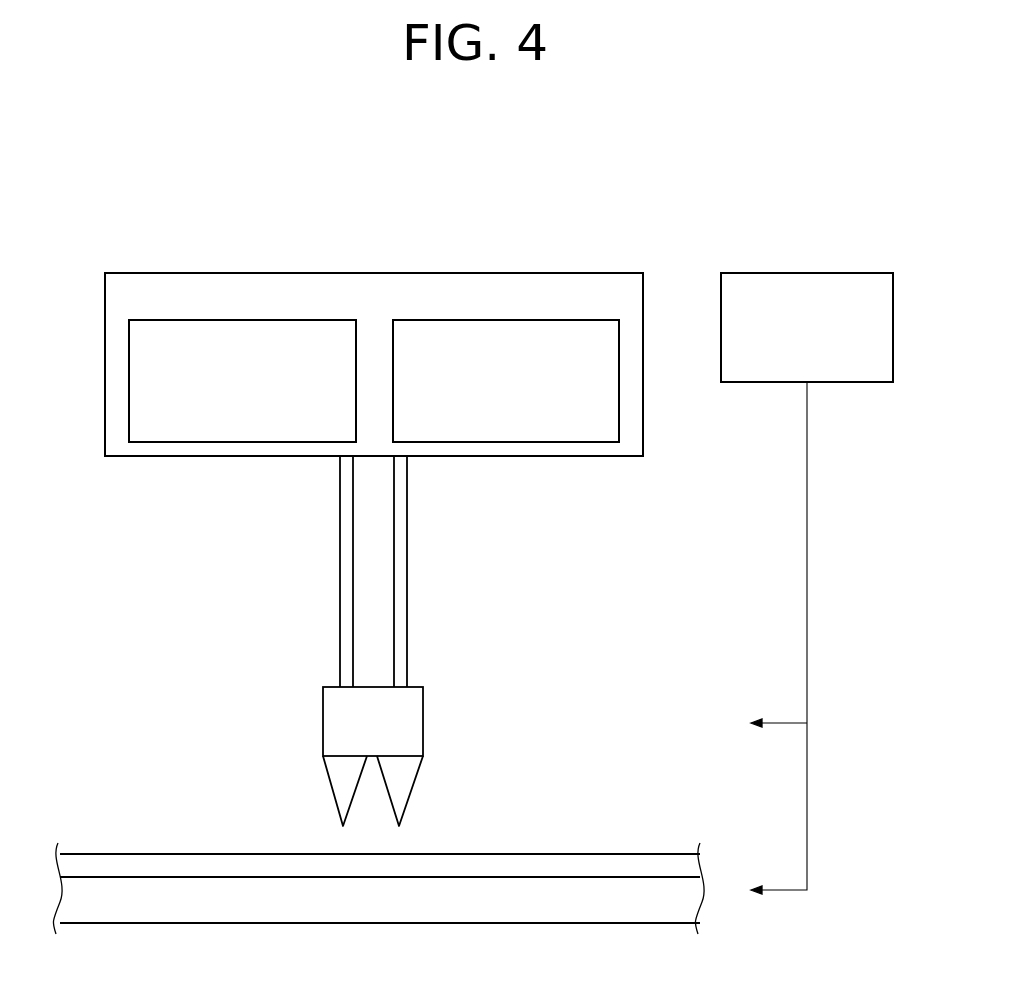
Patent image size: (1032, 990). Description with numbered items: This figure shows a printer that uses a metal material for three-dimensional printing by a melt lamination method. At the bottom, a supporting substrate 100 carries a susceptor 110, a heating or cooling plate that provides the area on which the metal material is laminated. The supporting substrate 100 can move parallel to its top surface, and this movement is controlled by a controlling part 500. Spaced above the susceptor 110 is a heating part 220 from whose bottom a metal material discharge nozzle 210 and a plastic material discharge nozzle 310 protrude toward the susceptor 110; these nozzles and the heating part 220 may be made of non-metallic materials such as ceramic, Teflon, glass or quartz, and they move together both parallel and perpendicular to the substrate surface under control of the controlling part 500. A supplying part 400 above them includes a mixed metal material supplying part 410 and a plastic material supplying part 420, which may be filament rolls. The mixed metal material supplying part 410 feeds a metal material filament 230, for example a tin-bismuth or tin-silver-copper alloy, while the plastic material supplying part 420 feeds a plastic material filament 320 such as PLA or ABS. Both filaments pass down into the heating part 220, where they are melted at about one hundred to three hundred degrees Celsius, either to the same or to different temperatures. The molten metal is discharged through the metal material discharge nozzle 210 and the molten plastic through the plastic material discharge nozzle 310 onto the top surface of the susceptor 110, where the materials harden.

The supporting substrate 100 is at (638, 898).
The susceptor 110 is at (571, 864).
The metal material discharge nozzle 210 is at (340, 782).
The heating part 220 is at (340, 723).
The metal material filament 230 is at (345, 578).
The plastic material discharge nozzle 310 is at (403, 782).
The plastic material filament 320 is at (401, 578).
The supplying part 400 is at (486, 273).
The mixed metal material supplying part 410 is at (262, 320).
The plastic material supplying part 420 is at (525, 320).
The controlling part 500 is at (827, 273).